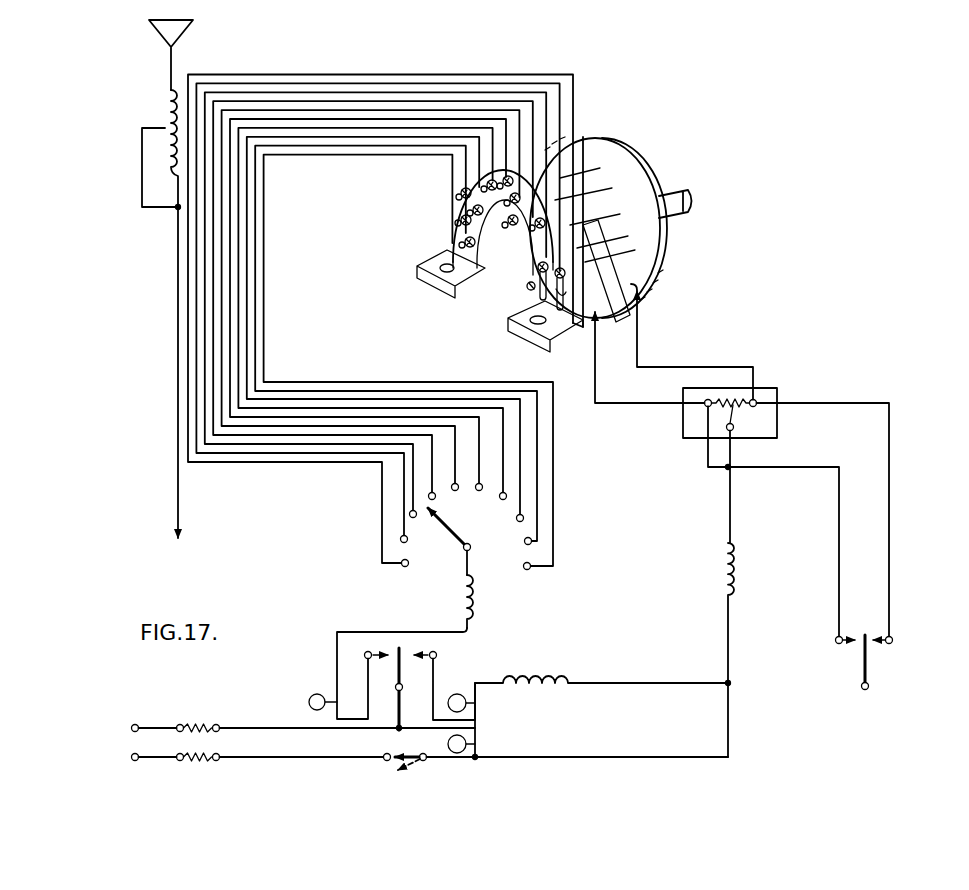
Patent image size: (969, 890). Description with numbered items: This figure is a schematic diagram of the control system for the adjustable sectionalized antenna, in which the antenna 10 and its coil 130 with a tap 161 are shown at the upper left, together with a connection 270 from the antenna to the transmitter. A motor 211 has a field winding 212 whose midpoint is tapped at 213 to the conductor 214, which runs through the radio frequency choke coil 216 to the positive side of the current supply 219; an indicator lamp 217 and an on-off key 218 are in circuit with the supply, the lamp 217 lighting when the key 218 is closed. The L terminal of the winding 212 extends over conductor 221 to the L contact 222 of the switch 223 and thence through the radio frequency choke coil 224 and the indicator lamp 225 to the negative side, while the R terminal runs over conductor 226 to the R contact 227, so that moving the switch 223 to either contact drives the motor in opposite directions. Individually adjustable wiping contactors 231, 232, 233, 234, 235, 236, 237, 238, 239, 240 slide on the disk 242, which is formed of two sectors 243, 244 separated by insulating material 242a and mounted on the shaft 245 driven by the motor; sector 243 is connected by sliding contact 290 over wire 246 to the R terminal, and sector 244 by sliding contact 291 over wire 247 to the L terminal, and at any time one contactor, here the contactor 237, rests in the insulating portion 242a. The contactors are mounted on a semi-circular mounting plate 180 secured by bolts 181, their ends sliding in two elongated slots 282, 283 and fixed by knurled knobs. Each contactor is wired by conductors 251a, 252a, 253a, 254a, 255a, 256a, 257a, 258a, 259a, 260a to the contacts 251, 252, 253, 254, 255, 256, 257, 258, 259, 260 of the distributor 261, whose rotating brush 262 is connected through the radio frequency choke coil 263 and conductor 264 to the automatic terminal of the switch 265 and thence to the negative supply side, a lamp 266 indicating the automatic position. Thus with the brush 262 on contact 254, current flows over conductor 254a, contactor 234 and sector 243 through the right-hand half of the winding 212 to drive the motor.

The antenna 10 is at (181, 66).
The loading coil 130 is at (164, 108).
The coil tap 161 is at (154, 127).
The connection from the antenna to the transmitter 270 is at (178, 272).
The conductor 251a is at (371, 463).
The conductor 252a is at (356, 454).
The conductor 253a is at (339, 446).
The conductor 254a is at (323, 437).
The conductor 255a is at (306, 428).
The conductor 256a is at (381, 417).
The conductor 257a is at (355, 408).
The conductor 258a is at (335, 399).
The conductor 259a is at (315, 391).
The conductor 260a is at (295, 382).
The distributor contact 251 is at (409, 566).
The distributor contact 252 is at (408, 542).
The distributor contact 253 is at (416, 518).
The distributor contact 254 is at (436, 499).
The distributor contact 255 is at (460, 490).
The distributor contact 256 is at (481, 491).
The distributor contact 257 is at (507, 496).
The distributor contact 258 is at (524, 518).
The distributor contact 259 is at (532, 541).
The distributor contact 260 is at (531, 566).
The distributor 261 is at (488, 570).
The rotating brush 262 is at (463, 560).
The radio frequency choke coil 263 is at (474, 600).
The conductor 264 is at (396, 632).
The switch 265 is at (396, 660).
The lamp 266 is at (303, 698).
The radio frequency choke coil 224 is at (536, 689).
The indicator lamp 225 is at (456, 694).
The indicator lamp 217 is at (455, 753).
The on-off key 218 is at (407, 755).
The current supply 219 is at (260, 743).
The motor 211 is at (765, 389).
The field winding 212 is at (740, 410).
The midpoint tap 213 is at (740, 393).
The conductor 214 is at (731, 500).
The radio frequency choke coil 216 is at (735, 569).
The conductor 221 is at (708, 460).
The L contact 222 is at (838, 645).
The manual switch 223 is at (877, 647).
The conductor 226 is at (846, 403).
The R contact 227 is at (895, 637).
The disk 242 is at (607, 142).
The insulating material 242a is at (620, 318).
The sector 243 is at (652, 265).
The sector 244 is at (583, 334).
The shaft 245 is at (676, 192).
The wire 246 is at (676, 367).
The wire 247 is at (618, 404).
The sliding contact 290 is at (662, 277).
The sliding contact 291 is at (600, 305).
The semi-circular mounting plate 180 is at (455, 250).
The bolts 181 is at (420, 280).
The wiping contactor 231 is at (535, 292).
The wiping contactor 232 is at (556, 282).
The wiping contactor 233 is at (540, 274).
The wiping contactor 234 is at (536, 230).
The wiping contactor 235 is at (508, 228).
The wiping contactor 236 is at (511, 203).
The wiping contactor 237 is at (500, 176).
The wiping contactor 238 is at (458, 196).
The wiping contactor 239 is at (483, 187).
The wiping contactor 240 is at (458, 243).
The semi-circular slot 282 is at (467, 212).
The semi-circular slot 283 is at (458, 224).